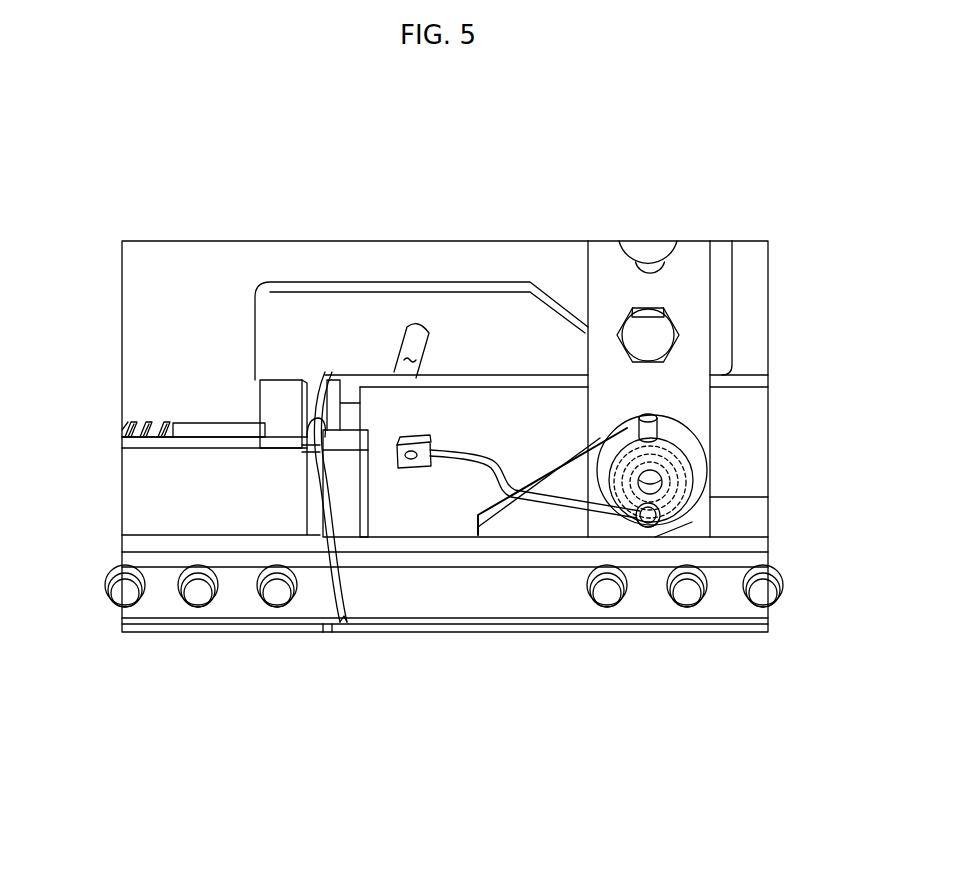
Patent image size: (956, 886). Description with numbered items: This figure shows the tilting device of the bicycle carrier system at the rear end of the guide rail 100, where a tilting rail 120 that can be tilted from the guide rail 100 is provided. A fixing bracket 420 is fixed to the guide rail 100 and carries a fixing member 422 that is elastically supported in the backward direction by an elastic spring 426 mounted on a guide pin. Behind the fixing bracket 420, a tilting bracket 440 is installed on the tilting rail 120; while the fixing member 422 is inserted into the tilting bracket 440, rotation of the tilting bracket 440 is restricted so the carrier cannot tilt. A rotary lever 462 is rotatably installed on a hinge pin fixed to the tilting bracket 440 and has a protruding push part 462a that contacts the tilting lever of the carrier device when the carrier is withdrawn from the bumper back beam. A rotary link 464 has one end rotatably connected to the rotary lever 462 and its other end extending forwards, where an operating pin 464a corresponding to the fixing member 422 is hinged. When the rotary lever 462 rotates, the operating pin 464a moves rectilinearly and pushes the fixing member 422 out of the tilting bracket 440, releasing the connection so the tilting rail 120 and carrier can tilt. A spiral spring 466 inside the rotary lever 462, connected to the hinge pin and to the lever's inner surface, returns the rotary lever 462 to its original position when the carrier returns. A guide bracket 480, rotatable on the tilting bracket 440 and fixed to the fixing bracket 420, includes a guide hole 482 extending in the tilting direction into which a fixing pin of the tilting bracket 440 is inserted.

The guide rail 100 is at (237, 605).
The tilting rail 120 is at (537, 606).
The fixing bracket 420 is at (147, 485).
The fixing member 422 is at (215, 430).
The elastic spring 426 is at (147, 420).
The tilting bracket 440 is at (517, 408).
The rotary lever 462 is at (690, 478).
The push part 462a is at (650, 422).
The rotary link 464 is at (533, 495).
The operating pin 464a is at (385, 458).
The spiral spring 466 is at (673, 505).
The guide bracket 480 is at (318, 312).
The guide hole 482 is at (417, 355).